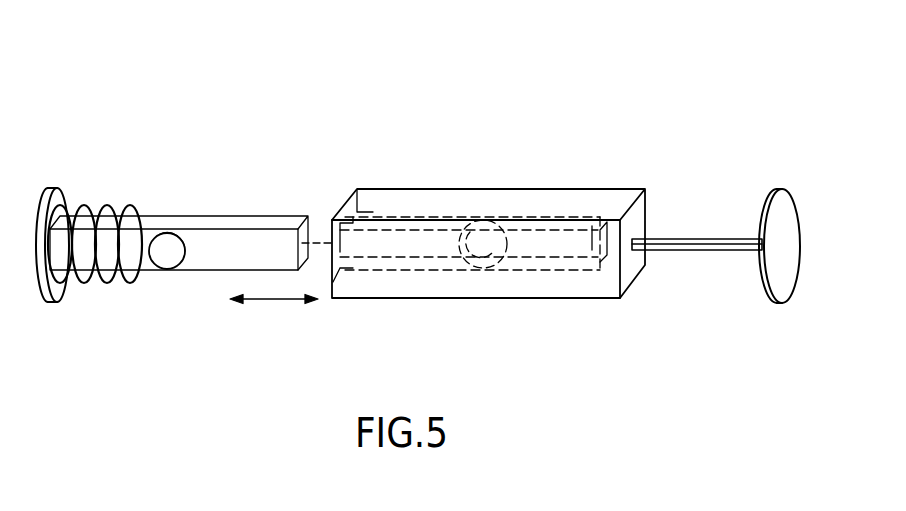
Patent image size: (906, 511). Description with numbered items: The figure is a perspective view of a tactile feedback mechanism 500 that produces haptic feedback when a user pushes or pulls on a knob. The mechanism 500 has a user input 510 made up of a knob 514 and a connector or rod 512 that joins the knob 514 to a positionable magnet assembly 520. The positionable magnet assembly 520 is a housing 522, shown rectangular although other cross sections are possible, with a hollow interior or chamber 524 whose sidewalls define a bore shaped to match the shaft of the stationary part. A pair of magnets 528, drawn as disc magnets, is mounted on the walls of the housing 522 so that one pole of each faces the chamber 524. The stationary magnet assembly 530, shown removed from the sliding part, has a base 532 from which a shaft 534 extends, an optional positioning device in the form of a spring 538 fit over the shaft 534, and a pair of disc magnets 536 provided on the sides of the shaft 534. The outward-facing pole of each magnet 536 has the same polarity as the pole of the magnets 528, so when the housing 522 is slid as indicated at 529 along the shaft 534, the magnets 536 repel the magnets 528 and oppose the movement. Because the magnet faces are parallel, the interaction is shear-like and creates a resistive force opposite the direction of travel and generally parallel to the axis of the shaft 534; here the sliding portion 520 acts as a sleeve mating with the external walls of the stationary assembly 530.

The tactile feedback mechanism 500 is at (152, 105).
The user input 510 is at (675, 193).
The rod 512 is at (705, 238).
The knob 514 is at (767, 198).
The positionable magnet assembly 520 is at (496, 138).
The housing 522 is at (553, 190).
The chamber 524 is at (372, 213).
The magnets 528 is at (484, 252).
The sliding direction 529 is at (273, 301).
The stationary magnet assembly 530 is at (207, 176).
The base 532 is at (44, 305).
The shaft 534 is at (264, 215).
The magnets 536 is at (187, 215).
The spring 538 is at (102, 283).